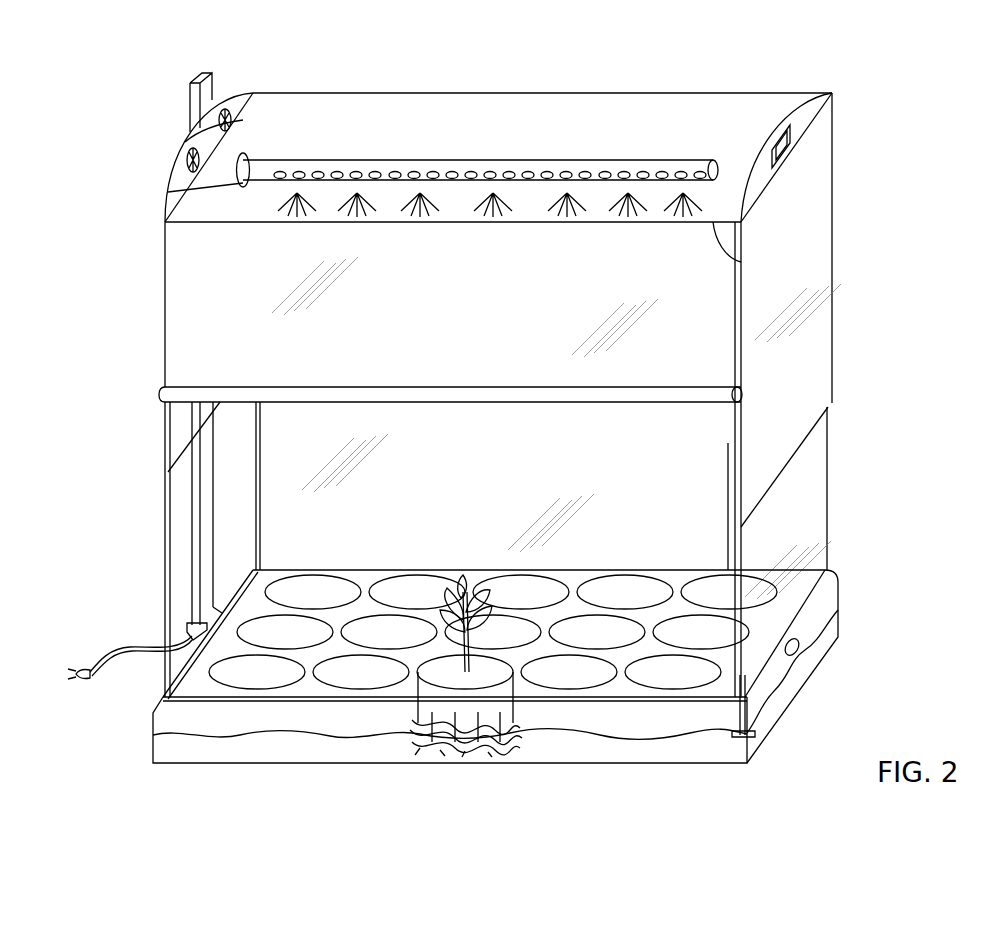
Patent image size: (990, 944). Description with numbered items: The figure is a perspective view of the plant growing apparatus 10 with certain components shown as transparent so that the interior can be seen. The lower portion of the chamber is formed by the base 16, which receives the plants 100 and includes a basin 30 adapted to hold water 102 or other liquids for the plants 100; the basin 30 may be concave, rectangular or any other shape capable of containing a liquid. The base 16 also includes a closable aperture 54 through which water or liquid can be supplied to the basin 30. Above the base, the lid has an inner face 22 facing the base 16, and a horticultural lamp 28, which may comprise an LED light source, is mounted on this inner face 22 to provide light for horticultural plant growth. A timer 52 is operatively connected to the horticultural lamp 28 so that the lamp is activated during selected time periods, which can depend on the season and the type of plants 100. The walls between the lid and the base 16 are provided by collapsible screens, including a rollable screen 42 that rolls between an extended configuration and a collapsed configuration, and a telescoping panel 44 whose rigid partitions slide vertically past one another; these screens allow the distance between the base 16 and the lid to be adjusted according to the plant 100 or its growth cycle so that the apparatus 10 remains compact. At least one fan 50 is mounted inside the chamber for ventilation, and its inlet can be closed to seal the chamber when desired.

The plant growing apparatus 10 is at (190, 55).
The base 16 is at (832, 572).
The inner face 22 is at (741, 262).
The horticultural lamp 28 is at (180, 203).
The basin 30 is at (135, 739).
The rollable screen 42 is at (177, 335).
The telescoping panel 44 is at (818, 437).
The fan 50 is at (212, 123).
The timer 52 is at (790, 130).
The closable aperture 54 is at (798, 652).
The plant 100 is at (510, 667).
The water 102 is at (336, 723).